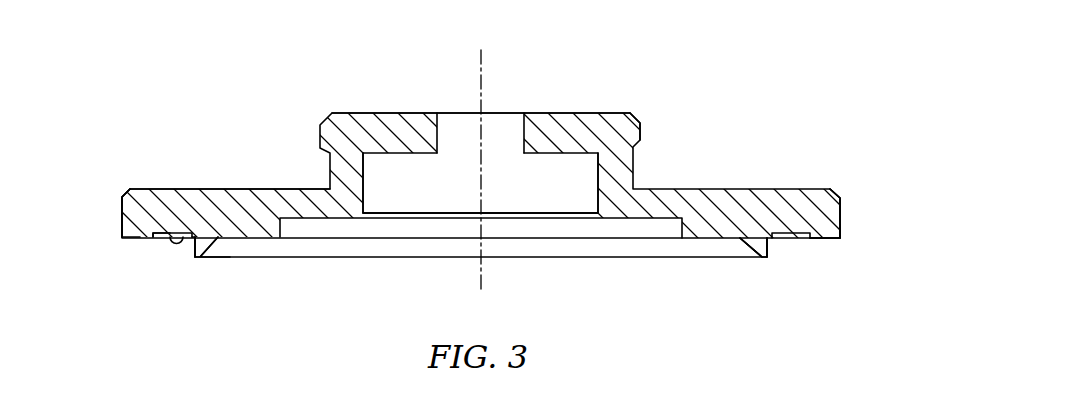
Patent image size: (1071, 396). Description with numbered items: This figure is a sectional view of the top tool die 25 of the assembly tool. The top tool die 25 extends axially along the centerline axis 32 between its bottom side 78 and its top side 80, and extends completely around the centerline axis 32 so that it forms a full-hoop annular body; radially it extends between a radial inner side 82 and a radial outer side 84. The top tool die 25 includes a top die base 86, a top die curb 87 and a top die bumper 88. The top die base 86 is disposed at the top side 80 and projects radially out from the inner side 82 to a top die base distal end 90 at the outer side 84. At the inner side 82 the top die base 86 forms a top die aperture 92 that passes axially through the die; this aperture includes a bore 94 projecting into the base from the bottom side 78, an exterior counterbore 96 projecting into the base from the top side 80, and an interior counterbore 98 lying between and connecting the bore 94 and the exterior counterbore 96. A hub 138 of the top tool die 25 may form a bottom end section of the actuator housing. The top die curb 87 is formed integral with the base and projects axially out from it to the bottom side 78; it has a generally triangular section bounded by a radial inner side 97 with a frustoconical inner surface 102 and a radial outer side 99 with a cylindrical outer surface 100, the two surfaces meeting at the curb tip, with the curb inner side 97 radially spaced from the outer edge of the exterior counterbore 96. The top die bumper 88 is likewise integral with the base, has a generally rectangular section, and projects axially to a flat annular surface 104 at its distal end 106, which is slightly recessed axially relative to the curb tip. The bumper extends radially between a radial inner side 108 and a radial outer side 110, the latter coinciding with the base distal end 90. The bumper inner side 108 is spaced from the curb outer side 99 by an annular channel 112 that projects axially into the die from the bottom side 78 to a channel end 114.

The top tool die 25 is at (481, 133).
The centerline axis 32 is at (481, 67).
The bottom side 78 is at (421, 259).
The top side 80 is at (400, 112).
The radial inner side 82 is at (438, 124).
The radial outer side 84 is at (120, 215).
The top die base 86 is at (287, 176).
The top die curb 87 is at (214, 282).
The top die bumper 88 is at (122, 247).
The top die base distal end 90 is at (120, 215).
The top die aperture 92 is at (548, 216).
The bore 94 is at (510, 118).
The exterior counterbore 96 is at (654, 220).
The radial inner side of top die curb 97 is at (745, 252).
The interior counterbore 98 is at (567, 180).
The radial outer side of top die curb 99 is at (192, 246).
The outer surface 100 is at (192, 246).
The inner surface 102 is at (745, 252).
The annular surface 104 is at (830, 240).
The distal end of top die bumper 106 is at (830, 240).
The radial inner side of top die bumper 108 is at (152, 247).
The radial outer side of top die bumper 110 is at (841, 214).
The channel 112 is at (163, 250).
The channel end 114 is at (186, 236).
The hub 138 is at (650, 110).